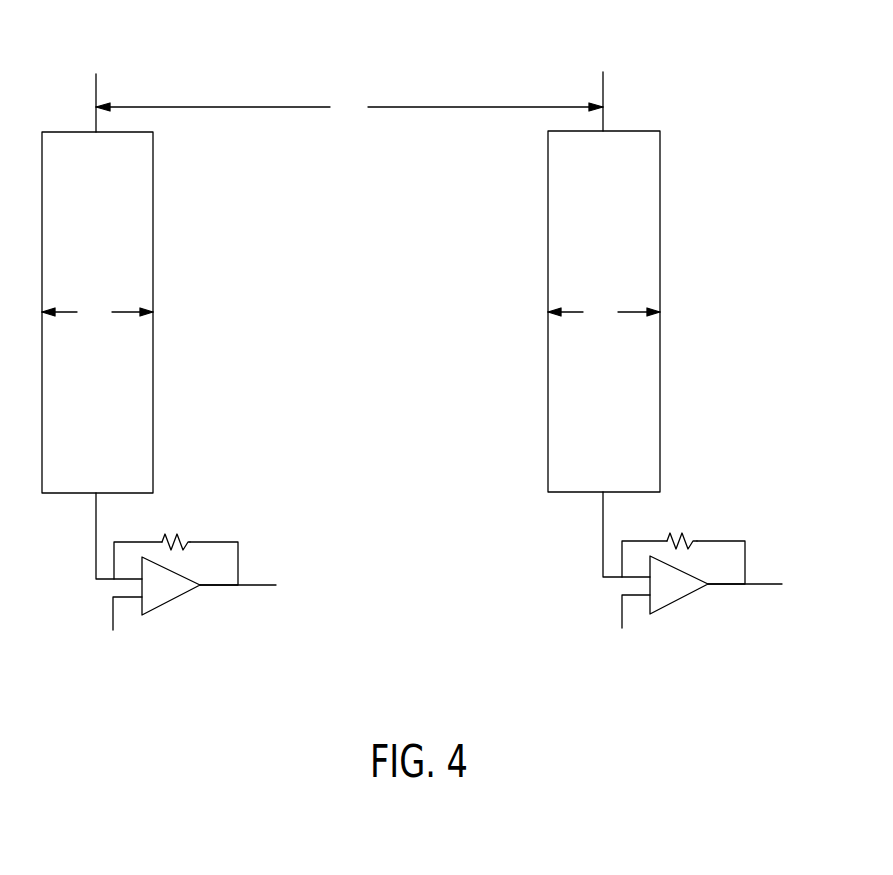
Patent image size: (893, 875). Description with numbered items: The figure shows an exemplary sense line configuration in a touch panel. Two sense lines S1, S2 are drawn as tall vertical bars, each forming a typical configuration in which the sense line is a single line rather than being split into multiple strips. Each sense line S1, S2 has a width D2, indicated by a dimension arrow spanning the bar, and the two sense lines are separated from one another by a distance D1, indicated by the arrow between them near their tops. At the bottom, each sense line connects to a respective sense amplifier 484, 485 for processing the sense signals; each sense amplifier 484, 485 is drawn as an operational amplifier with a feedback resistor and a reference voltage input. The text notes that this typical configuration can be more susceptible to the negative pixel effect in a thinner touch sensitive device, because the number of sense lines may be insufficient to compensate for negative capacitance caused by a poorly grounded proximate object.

The sense amplifier 484 is at (184, 608).
The sense amplifier 485 is at (687, 604).
The sense line S1 is at (97, 251).
The sense line S2 is at (604, 251).
The distance D1 is at (349, 107).
The width D2 is at (351, 312).